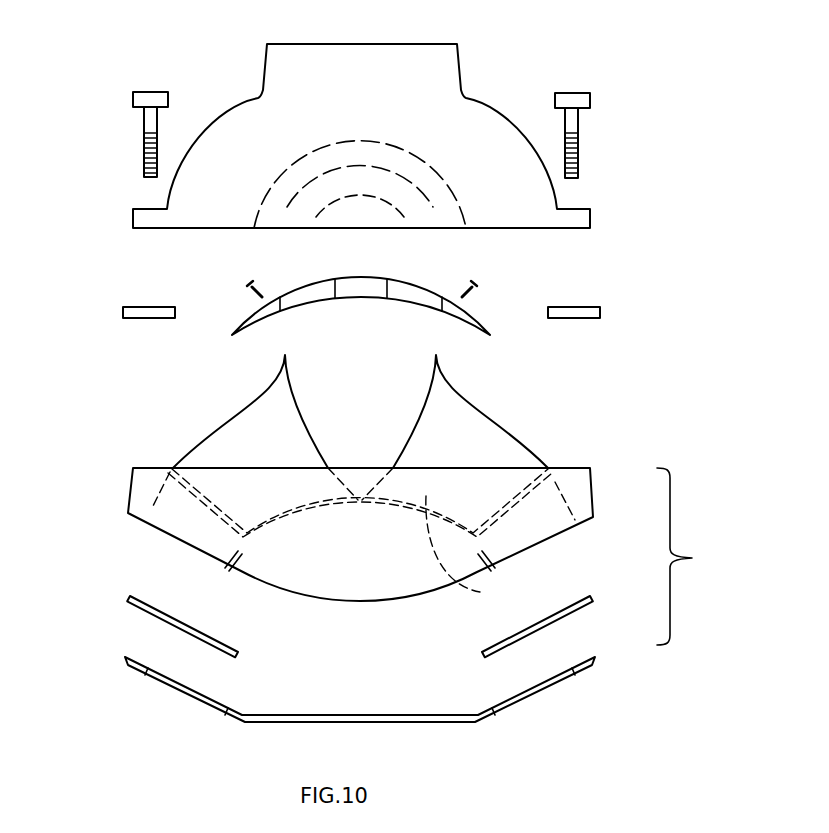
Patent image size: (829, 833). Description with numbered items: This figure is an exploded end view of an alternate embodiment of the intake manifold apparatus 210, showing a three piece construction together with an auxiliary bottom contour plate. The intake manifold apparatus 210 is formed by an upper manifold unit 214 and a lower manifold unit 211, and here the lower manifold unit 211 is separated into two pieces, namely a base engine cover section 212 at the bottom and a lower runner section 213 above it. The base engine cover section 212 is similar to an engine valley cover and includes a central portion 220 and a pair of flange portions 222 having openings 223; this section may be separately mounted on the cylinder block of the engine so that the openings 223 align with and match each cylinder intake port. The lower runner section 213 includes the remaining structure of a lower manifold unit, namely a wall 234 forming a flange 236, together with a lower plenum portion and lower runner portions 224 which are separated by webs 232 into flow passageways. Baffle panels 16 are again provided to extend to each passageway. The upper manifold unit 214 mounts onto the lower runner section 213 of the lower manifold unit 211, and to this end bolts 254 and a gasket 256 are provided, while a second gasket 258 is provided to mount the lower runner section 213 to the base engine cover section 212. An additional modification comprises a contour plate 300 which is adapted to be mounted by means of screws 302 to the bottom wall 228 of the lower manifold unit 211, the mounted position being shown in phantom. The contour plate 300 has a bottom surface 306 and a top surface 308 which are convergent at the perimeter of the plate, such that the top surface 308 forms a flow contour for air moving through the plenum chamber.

The intake manifold apparatus 210 is at (618, 196).
The lower manifold unit 211 is at (698, 556).
The base engine cover section 212 is at (128, 650).
The lower runner section 213 is at (176, 418).
The upper manifold unit 214 is at (447, 125).
The baffle panels 16 is at (272, 450).
The central portion 220 is at (347, 715).
The flange portions 222 is at (133, 672).
The openings 223 is at (205, 707).
The lower plenum portion and lower runner portions 224 is at (363, 468).
The bottom wall 228 is at (478, 552).
The webs 232 is at (192, 530).
The wall 234 is at (131, 491).
The flange 236 is at (571, 469).
The bolts 254 is at (160, 92).
The gasket 256 is at (140, 307).
The second gasket 258 is at (197, 633).
The contour plate 300 is at (308, 303).
The screws 302 is at (245, 277).
The bottom surface 306 is at (353, 297).
The top surface 308 is at (325, 280).